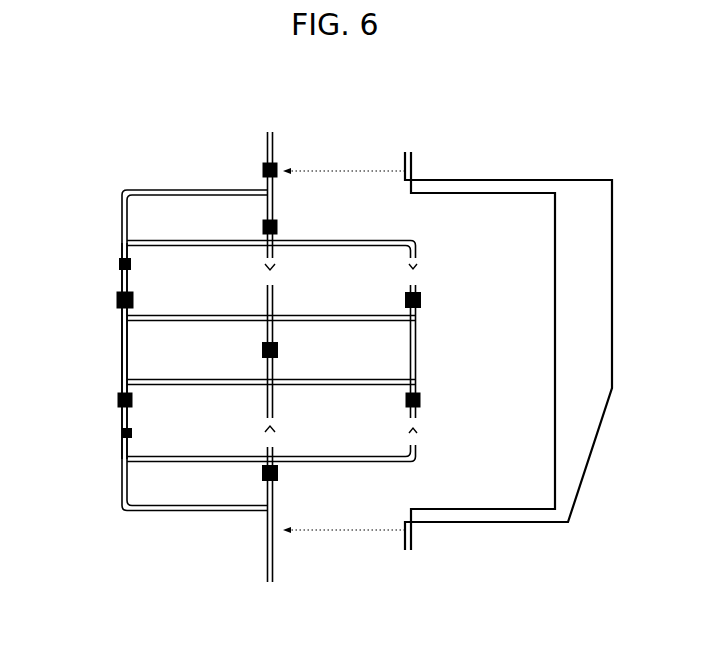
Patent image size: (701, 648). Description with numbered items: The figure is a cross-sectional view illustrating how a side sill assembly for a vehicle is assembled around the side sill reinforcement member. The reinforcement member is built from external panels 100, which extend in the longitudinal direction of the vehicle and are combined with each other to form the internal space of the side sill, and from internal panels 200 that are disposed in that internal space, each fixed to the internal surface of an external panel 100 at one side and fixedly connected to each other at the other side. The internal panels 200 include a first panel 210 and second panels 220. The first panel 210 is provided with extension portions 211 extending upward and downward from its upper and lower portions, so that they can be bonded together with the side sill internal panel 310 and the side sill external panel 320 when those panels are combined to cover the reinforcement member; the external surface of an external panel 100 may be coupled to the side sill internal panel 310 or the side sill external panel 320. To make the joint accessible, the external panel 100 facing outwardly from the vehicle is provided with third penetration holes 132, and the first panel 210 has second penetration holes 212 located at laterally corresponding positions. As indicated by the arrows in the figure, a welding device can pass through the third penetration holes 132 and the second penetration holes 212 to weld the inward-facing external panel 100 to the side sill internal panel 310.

The external panel 100 is at (163, 237).
The third penetration hole 132 is at (414, 265).
The internal panel 200 is at (313, 400).
The first panel 210 is at (286, 153).
The extension portion 211 is at (271, 140).
The second penetration hole 212 is at (268, 271).
The second panel 220 is at (175, 316).
The side sill internal panel 310 is at (207, 189).
The side sill external panel 320 is at (484, 168).